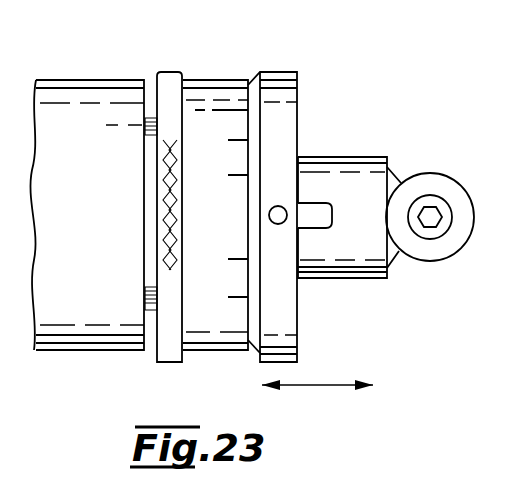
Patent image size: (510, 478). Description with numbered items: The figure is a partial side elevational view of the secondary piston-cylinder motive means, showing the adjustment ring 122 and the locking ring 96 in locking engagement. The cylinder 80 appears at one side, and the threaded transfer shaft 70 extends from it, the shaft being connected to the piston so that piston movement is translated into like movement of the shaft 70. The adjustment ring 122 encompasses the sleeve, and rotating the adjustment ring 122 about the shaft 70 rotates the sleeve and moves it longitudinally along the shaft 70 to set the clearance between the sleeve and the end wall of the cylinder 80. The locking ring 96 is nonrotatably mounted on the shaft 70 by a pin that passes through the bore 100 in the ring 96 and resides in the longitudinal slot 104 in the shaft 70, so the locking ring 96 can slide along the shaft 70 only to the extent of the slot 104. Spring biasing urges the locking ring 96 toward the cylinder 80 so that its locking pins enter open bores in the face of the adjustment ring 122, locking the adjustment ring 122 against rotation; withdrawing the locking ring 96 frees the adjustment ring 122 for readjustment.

The transfer shaft 70 is at (362, 157).
The cylinder means 80 is at (87, 80).
The locking ring 96 is at (278, 72).
The bore hole 100 is at (282, 207).
The longitudinal slot 104 is at (312, 222).
The adjustment ring 122 is at (168, 72).